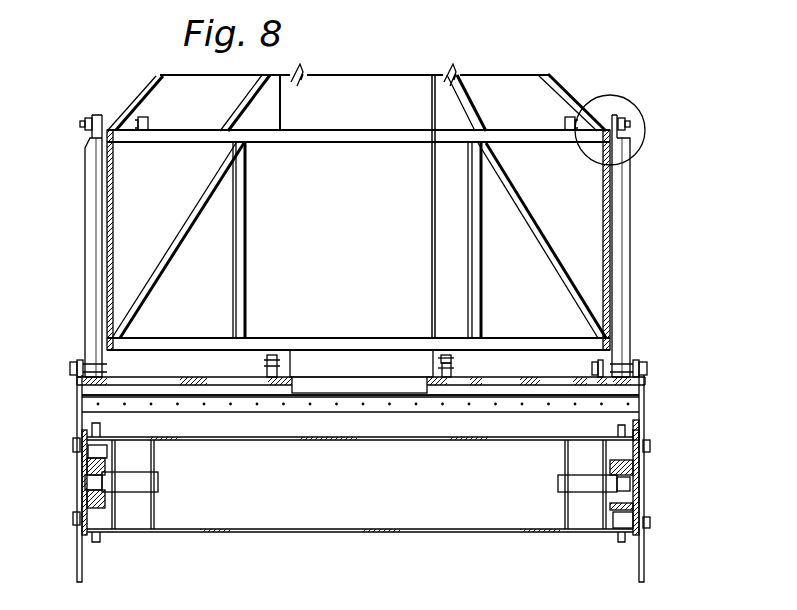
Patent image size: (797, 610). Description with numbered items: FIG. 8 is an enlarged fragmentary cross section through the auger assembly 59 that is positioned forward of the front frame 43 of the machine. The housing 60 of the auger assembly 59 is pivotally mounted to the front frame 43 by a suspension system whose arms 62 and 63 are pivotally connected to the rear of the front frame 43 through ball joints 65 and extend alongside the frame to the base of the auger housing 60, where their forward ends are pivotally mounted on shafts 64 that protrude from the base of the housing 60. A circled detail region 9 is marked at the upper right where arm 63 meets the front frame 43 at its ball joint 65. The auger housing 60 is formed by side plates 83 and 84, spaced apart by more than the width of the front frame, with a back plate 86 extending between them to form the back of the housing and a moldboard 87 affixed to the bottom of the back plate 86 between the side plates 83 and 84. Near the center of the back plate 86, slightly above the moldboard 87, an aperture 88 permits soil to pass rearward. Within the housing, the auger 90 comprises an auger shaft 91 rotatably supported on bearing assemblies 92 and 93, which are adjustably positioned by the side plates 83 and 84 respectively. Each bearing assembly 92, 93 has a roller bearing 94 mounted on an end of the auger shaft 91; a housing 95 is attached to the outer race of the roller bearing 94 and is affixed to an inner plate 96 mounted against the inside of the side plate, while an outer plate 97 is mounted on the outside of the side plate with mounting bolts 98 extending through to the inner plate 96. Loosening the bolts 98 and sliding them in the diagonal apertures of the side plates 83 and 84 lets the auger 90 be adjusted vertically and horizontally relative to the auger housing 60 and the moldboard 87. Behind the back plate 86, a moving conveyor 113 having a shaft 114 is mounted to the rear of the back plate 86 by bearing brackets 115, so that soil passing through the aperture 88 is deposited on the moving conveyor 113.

The detail circle 9 is at (600, 96).
The front frame 43 is at (163, 268).
The auger assembly 59 is at (655, 396).
The auger housing 60 is at (645, 425).
The arm 62 is at (88, 252).
The arm 63 is at (630, 254).
The shaft 64 is at (68, 368).
The ball joint 65 is at (78, 124).
The side plate 83 is at (77, 548).
The side plate 84 is at (645, 552).
The back plate 86 is at (162, 378).
The moldboard 87 is at (401, 411).
The aperture 88 is at (425, 391).
The auger 90 is at (237, 538).
The auger shaft 91 is at (415, 534).
The bearing assembly 92 is at (118, 469).
The bearing assembly 93 is at (598, 468).
The roller bearing 94 is at (86, 468).
The housing 95 is at (360, 487).
The inner plate 96 is at (87, 505).
The outer plate 97 is at (84, 488).
The mounting bolt 98 is at (73, 444).
The moving conveyor 113 is at (390, 372).
The shaft 114 is at (455, 360).
The bearing bracket 115 is at (262, 362).